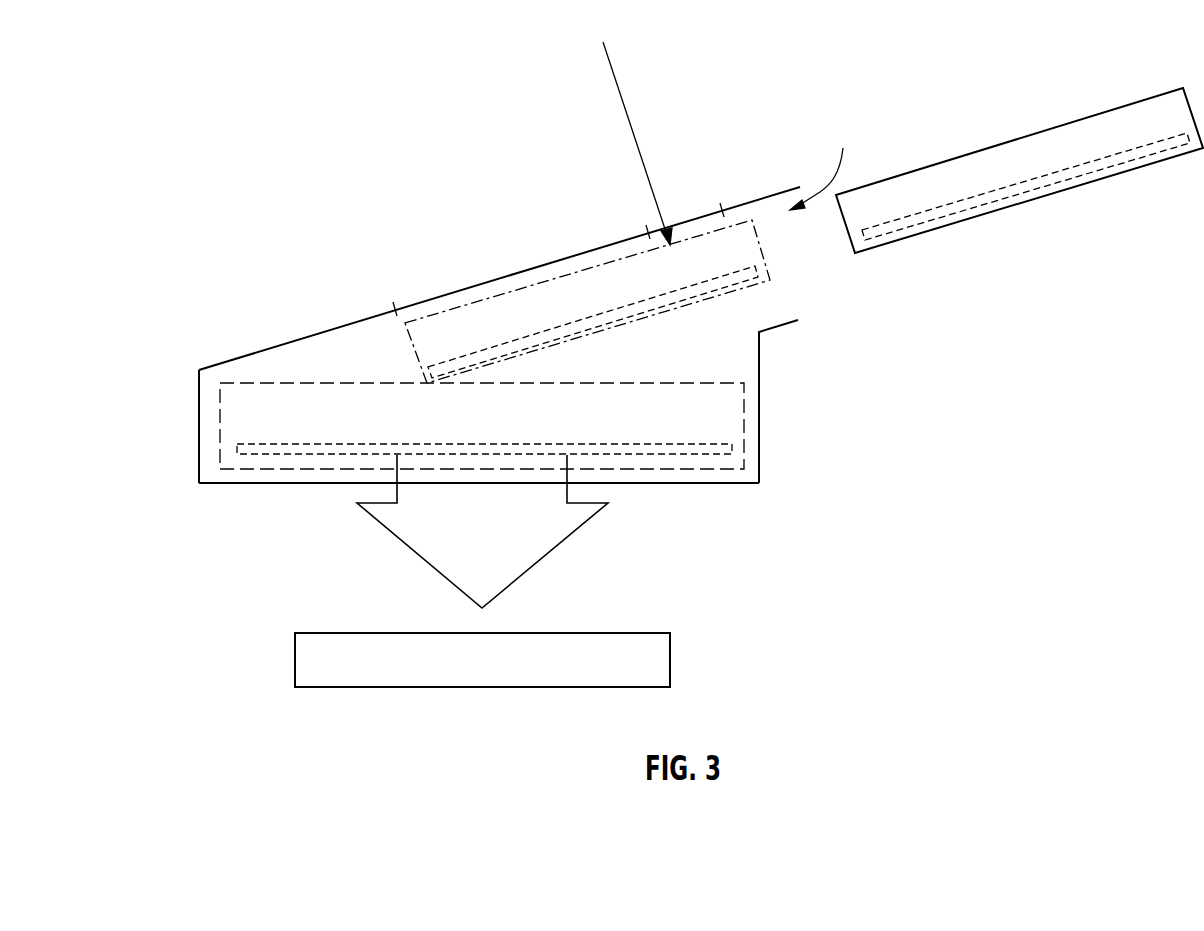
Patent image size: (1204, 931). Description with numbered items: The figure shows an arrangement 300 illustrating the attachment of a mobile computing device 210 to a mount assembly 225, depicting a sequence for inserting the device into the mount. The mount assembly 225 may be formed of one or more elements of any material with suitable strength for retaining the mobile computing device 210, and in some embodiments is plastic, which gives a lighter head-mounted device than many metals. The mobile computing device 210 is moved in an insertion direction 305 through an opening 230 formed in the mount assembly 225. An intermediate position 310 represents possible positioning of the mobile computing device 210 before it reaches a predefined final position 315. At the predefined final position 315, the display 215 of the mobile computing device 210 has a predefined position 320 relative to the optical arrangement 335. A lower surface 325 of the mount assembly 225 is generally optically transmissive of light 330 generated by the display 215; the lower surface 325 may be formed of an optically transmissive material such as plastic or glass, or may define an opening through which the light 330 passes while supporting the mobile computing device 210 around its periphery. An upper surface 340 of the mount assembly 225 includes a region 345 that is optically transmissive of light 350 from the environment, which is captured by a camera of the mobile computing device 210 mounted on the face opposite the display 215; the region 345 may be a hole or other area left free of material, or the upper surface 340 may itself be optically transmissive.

The imaging system 300 is at (499, 313).
The mobile computing device 210 is at (1103, 110).
The display 215 is at (660, 316).
The mount assembly 225 is at (262, 352).
The opening 230 is at (827, 164).
The incident light direction 305 is at (995, 120).
The intermediate position 310 is at (562, 277).
The predefined final position 315 is at (745, 408).
The predefined position 320 is at (738, 451).
The lower surface 325 is at (692, 485).
The light 330 is at (418, 562).
The optical arrangement 335 is at (670, 658).
The upper surface 340 is at (397, 308).
The region 345 is at (693, 218).
The light 350 is at (617, 73).